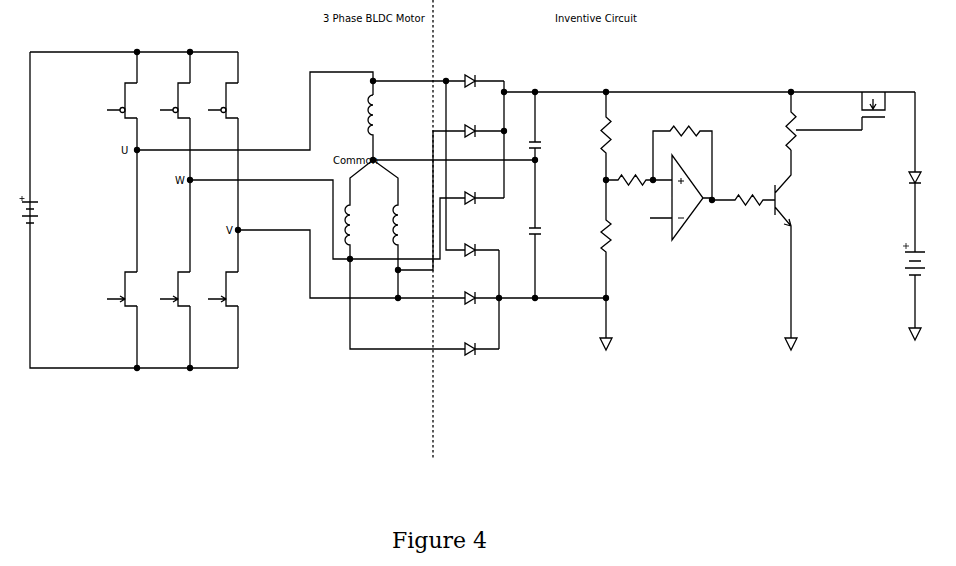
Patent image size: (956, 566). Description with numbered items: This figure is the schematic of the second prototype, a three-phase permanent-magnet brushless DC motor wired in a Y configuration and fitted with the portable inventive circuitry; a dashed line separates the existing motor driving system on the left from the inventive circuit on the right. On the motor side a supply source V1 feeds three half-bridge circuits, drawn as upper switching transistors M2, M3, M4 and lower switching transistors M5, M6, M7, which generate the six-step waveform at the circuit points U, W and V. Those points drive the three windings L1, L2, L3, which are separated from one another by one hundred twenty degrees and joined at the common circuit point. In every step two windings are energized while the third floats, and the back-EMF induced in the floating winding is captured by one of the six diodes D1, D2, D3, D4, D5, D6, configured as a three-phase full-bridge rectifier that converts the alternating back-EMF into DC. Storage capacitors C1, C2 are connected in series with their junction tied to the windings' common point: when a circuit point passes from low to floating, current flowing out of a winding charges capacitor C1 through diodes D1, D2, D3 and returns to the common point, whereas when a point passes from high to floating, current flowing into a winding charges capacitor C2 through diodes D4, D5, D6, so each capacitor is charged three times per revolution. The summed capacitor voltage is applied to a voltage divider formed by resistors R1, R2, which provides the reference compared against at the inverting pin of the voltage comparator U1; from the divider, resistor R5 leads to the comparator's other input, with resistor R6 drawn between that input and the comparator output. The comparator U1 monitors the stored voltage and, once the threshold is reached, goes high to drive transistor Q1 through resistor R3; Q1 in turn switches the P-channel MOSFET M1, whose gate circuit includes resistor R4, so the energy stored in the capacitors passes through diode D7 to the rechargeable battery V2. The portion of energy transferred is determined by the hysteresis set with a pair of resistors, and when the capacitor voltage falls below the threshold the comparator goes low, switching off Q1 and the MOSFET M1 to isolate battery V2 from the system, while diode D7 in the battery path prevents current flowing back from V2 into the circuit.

The motor supply voltage source V1 is at (36, 207).
The high-side MOSFET phase U M2 is at (131, 100).
The P-channel MOSFET M3 is at (184, 100).
The high-side MOSFET phase V M4 is at (232, 100).
The low-side MOSFET phase U M5 is at (131, 289).
The low-side MOSFET phase W M6 is at (184, 289).
The low-side MOSFET phase V M7 is at (232, 289).
The winding L1 is at (380, 127).
The winding L2 is at (359, 209).
The winding L3 is at (395, 215).
The diode D1 is at (483, 74).
The diode D2 is at (483, 124).
The diode D3 is at (483, 191).
The diode D4 is at (481, 243).
The diode D5 is at (481, 291).
The diode D6 is at (481, 342).
The output diode D7 is at (921, 172).
The storage capacitor C1 is at (541, 126).
The storage capacitor C2 is at (541, 229).
The voltage divider resistor R1 is at (613, 136).
The voltage divider resistor R2 is at (613, 259).
The hysteresis resistor R3 is at (743, 193).
The hysteresis resistor R4 is at (824, 121).
The input resistor R5 is at (639, 173).
The feedback resistor R6 is at (682, 157).
The voltage comparator U1 is at (679, 208).
The transistor Q1 is at (794, 244).
The PMOS switch transistor M1 is at (871, 96).
The rechargeable battery V2 is at (920, 281).